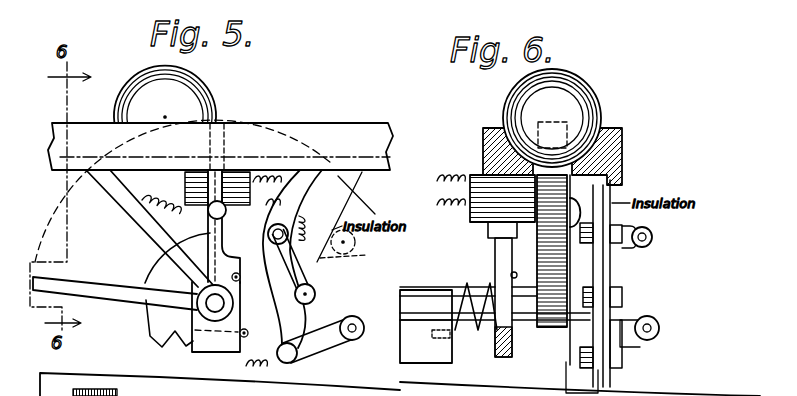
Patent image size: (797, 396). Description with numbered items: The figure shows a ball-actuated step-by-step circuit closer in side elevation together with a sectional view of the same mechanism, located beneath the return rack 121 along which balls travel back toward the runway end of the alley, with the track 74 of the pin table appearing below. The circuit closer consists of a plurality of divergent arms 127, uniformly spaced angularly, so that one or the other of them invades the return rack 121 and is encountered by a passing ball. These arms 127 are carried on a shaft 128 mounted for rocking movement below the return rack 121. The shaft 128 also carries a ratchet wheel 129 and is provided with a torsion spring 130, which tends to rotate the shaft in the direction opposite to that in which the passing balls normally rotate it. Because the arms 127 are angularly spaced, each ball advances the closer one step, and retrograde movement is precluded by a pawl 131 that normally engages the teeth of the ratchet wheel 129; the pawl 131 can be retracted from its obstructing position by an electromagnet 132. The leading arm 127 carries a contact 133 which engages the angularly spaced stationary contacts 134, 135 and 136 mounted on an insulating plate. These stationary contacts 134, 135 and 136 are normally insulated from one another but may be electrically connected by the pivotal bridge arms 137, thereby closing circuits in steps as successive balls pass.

In FIG. 5, the track 74 is at (112, 391).
In FIG. 5, the return rack 121 is at (312, 135).
In FIG. 6, the return rack 121 is at (627, 152).
In FIG. 5, the divergent arms 127 is at (201, 127).
In FIG. 6, the divergent arms 127 is at (636, 170).
In FIG. 5, the shaft 128 is at (207, 304).
In FIG. 6, the ratchet wheel 129 is at (500, 333).
In FIG. 5, the torsion spring 130 is at (246, 330).
In FIG. 6, the torsion spring 130 is at (466, 277).
In FIG. 5, the pawl 131 is at (256, 278).
In FIG. 6, the pawl 131 is at (498, 229).
In FIG. 5, the electromagnet 132 is at (186, 181).
In FIG. 6, the electromagnet 132 is at (470, 178).
In FIG. 5, the contact 133 is at (208, 220).
In FIG. 6, the contact 133 is at (580, 212).
In FIG. 5, the stationary contact 134 is at (284, 224).
In FIG. 6, the stationary contact 134 is at (638, 236).
In FIG. 5, the stationary contact 135 is at (318, 296).
In FIG. 6, the stationary contact 135 is at (592, 292).
In FIG. 5, the stationary contact 136 is at (310, 365).
In FIG. 6, the stationary contact 136 is at (612, 368).
In FIG. 5, the pivotal bridge arms 137 is at (330, 277).
In FIG. 6, the pivotal bridge arms 137 is at (623, 258).